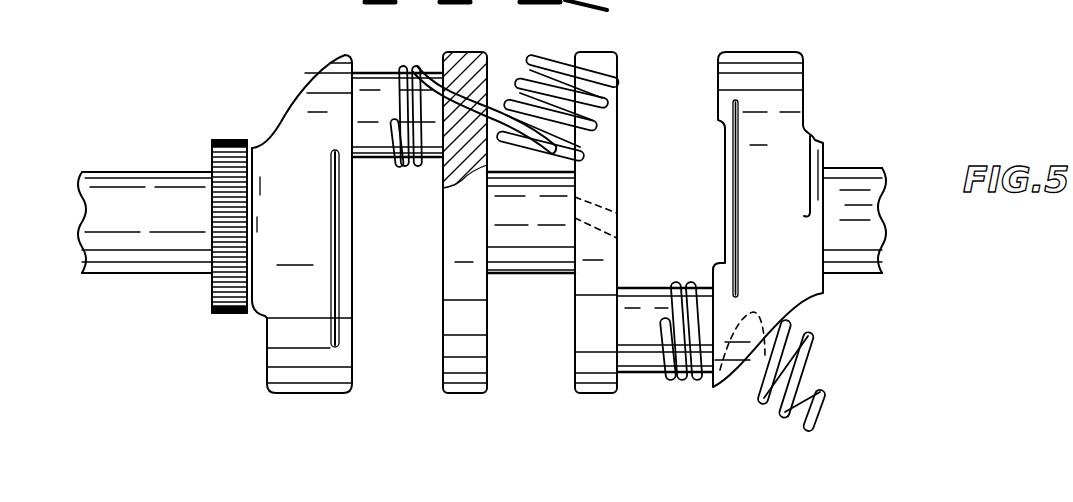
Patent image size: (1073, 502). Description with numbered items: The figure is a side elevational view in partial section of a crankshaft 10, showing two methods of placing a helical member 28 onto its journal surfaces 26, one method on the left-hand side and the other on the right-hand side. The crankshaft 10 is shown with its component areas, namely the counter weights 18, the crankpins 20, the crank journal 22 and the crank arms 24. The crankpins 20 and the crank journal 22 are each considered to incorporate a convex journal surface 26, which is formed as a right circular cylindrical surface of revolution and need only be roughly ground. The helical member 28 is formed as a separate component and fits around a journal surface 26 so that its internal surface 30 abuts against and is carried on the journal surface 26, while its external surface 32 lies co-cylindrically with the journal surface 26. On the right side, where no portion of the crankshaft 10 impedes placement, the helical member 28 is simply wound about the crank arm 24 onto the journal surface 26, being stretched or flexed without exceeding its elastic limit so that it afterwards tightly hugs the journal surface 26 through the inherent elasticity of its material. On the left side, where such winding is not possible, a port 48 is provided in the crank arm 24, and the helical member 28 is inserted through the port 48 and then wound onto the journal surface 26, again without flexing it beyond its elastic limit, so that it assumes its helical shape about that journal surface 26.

The crankshaft 10 is at (872, 177).
The counter weights 18 is at (788, 92).
The crankpins 20 is at (389, 162).
The crank journal 22 is at (540, 257).
The crank arms 24 is at (341, 162).
The journal surface 26 is at (373, 88).
The helical member 28 is at (620, 70).
The internal surface 30 is at (562, 80).
The external surface 32 is at (617, 118).
The port 48 is at (485, 75).